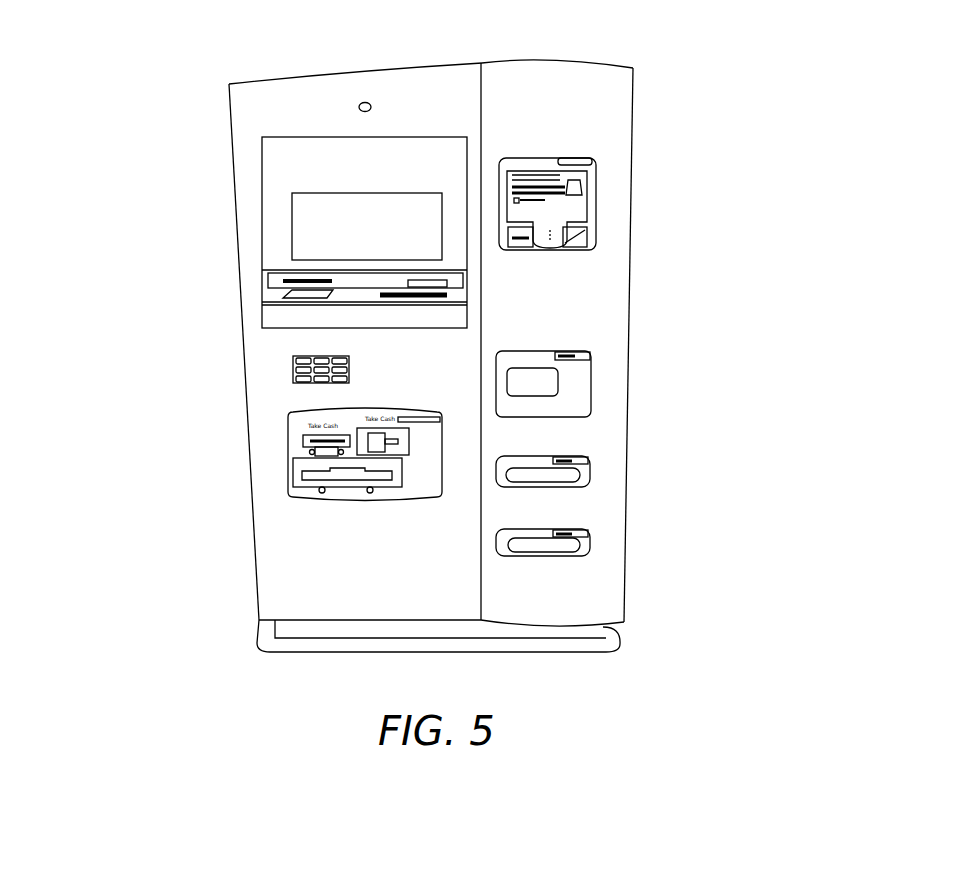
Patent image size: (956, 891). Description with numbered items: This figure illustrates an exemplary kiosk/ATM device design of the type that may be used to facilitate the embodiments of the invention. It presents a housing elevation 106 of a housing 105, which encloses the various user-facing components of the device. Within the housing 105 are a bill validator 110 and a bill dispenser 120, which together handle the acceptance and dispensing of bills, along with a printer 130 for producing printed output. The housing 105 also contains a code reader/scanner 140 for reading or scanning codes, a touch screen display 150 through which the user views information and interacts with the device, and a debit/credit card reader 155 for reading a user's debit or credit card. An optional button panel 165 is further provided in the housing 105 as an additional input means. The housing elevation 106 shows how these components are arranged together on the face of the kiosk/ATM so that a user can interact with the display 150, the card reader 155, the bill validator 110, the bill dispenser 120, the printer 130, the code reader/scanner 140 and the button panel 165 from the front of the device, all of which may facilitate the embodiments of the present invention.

The housing 105 is at (213, 125).
The housing elevation 106 is at (603, 297).
The touch screen display 150 is at (303, 212).
The button panel 165 is at (397, 283).
The bill validator 110 is at (305, 436).
The bill dispenser 120 is at (318, 487).
The debit/credit card reader 155 is at (420, 448).
The code reader/scanner 140 is at (603, 167).
The printer 130 is at (603, 376).